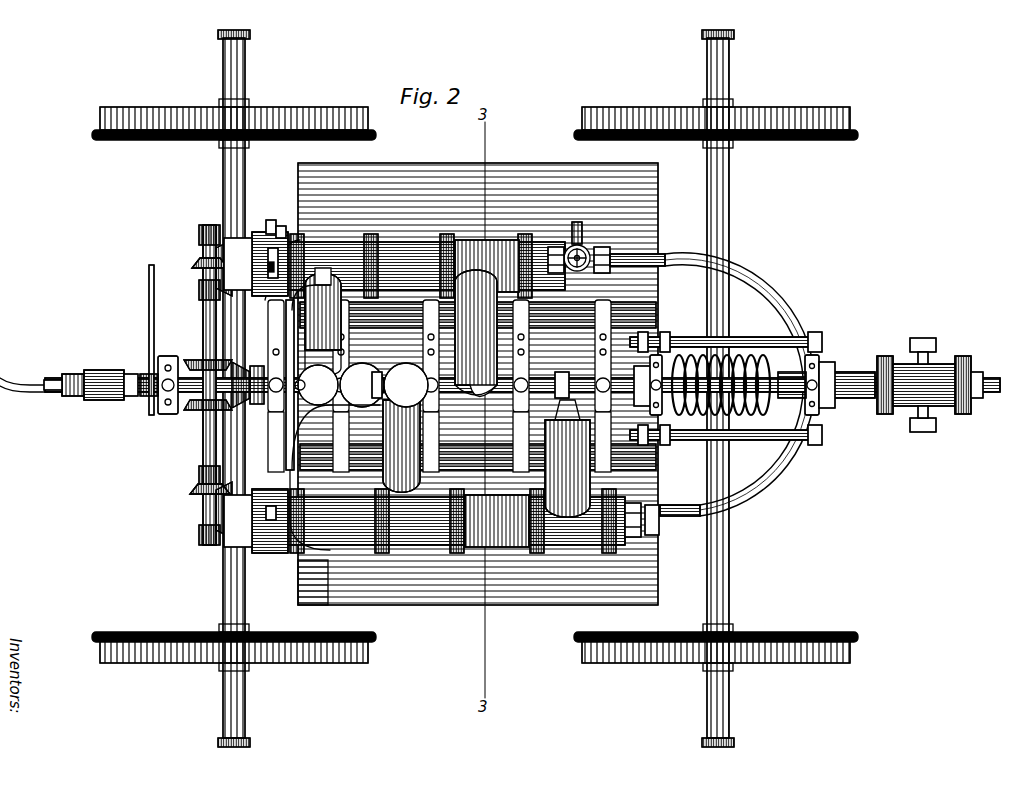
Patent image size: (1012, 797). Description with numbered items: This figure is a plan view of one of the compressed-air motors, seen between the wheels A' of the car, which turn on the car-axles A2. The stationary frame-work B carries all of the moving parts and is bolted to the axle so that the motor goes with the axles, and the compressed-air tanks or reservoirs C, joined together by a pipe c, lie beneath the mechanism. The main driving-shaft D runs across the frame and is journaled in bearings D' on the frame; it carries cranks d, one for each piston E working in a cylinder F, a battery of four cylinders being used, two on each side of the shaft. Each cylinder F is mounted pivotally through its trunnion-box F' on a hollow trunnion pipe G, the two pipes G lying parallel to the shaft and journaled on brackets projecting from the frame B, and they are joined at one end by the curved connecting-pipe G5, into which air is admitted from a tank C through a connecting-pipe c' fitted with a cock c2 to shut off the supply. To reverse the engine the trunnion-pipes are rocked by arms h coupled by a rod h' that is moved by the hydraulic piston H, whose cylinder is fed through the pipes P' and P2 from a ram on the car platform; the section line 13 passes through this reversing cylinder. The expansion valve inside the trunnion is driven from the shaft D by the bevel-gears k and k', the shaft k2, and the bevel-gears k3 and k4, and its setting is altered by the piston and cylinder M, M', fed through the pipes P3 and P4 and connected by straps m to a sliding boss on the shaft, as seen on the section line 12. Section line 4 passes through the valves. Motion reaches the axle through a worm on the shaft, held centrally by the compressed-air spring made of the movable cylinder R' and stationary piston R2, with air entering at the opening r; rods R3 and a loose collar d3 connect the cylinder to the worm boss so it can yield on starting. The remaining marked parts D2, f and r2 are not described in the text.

The car wheel A' is at (475, 365).
The car-axle A2 is at (222, 157).
The motor frame-work B is at (425, 318).
The compressed-air tank C is at (478, 384).
The tank connecting pipe c is at (278, 389).
The connecting-pipe c' is at (577, 236).
The cock or valve c2 is at (592, 242).
The main driving-shaft D is at (522, 399).
The bearing / worm D' is at (581, 386).
The bearing block D2 is at (790, 348).
The crank d is at (370, 372).
The loose collar d3 is at (640, 392).
The piston E is at (384, 387).
The cylinder F is at (447, 392).
The trunnion-box F' is at (508, 378).
The collar ring f is at (372, 240).
The hollow trunnion pipe G is at (440, 393).
The curved connecting-pipe G5 is at (765, 300).
The hydraulic piston H is at (296, 420).
The lever or arm h is at (261, 379).
The rod h' is at (297, 239).
The bevel-gear k is at (197, 385).
The bevel-gear k' is at (188, 374).
The shaft k2 is at (202, 316).
The bevel-gear k3 is at (196, 358).
The bevel-gear k4 is at (180, 418).
The piston M is at (73, 367).
The cylinder M' is at (111, 365).
The strap m is at (150, 408).
The pipe P' is at (329, 432).
The pipe P2 is at (345, 548).
The pipe P3 is at (44, 388).
The pipe P4 is at (150, 298).
The rod R is at (662, 482).
The spring cylinder R' is at (930, 367).
The spring piston R2 is at (866, 398).
The rod R3 is at (748, 338).
The opening r is at (970, 372).
The pin r2 is at (312, 396).
The section line 4 is at (334, 240).
The section line 12 is at (28, 384).
The section line 13 is at (272, 210).